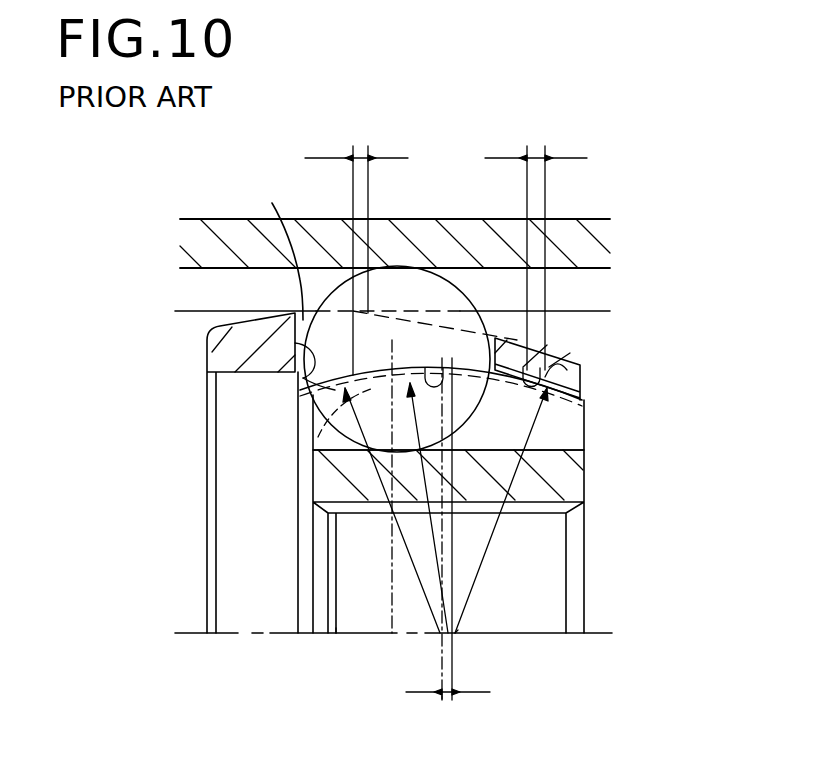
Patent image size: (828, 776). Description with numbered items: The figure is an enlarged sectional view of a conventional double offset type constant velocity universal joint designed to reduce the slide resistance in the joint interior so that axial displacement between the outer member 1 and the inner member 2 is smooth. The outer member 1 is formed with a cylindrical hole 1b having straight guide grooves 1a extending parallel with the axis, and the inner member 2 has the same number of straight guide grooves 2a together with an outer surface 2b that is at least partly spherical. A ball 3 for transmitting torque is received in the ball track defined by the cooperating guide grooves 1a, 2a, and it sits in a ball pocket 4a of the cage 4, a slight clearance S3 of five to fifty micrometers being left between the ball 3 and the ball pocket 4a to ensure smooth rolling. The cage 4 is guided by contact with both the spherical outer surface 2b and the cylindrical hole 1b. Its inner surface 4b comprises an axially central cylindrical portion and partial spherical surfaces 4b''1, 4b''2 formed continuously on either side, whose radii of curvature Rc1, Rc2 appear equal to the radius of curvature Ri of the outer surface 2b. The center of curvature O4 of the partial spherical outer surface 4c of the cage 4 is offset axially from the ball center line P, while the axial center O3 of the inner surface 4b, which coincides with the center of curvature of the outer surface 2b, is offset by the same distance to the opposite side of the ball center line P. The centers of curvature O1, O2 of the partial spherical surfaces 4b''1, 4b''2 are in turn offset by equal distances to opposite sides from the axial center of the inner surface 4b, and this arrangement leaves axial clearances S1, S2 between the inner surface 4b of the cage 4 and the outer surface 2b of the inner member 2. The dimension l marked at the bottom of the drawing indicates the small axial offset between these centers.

The outer member 1 is at (240, 238).
The straight guide grooves of the outer member 1a is at (184, 268).
The cylindrical hole 1b is at (192, 311).
The inner member 2 is at (327, 483).
The straight guide grooves of the inner member 2a is at (566, 452).
The outer surface of the inner member 2b is at (582, 395).
The ball 3 is at (417, 280).
The cage 4 is at (219, 360).
The ball pocket 4a is at (298, 382).
The inner surface of the cage 4b is at (462, 281).
The partial spherical surface 4b''1 is at (268, 409).
The partial spherical surface 4b''2 is at (611, 367).
The outer surface of the cage 4c is at (560, 345).
The axial clearance S1 is at (361, 157).
The axial clearance S2 is at (538, 157).
The slight clearance S3 is at (277, 244).
The radius of curvature Rc1 is at (412, 565).
The radius of curvature Rc2 is at (489, 543).
The radius of curvature of the outer surface of the inner member Ri is at (437, 553).
The ball center line P is at (392, 597).
The center of curvature O1 is at (440, 633).
The center of curvature O2 is at (455, 633).
The axial center of the inner surface O3 is at (453, 633).
The center of curvature of the outer surface of the cage O4 is at (337, 633).
The offset distance ℓ l is at (445, 698).